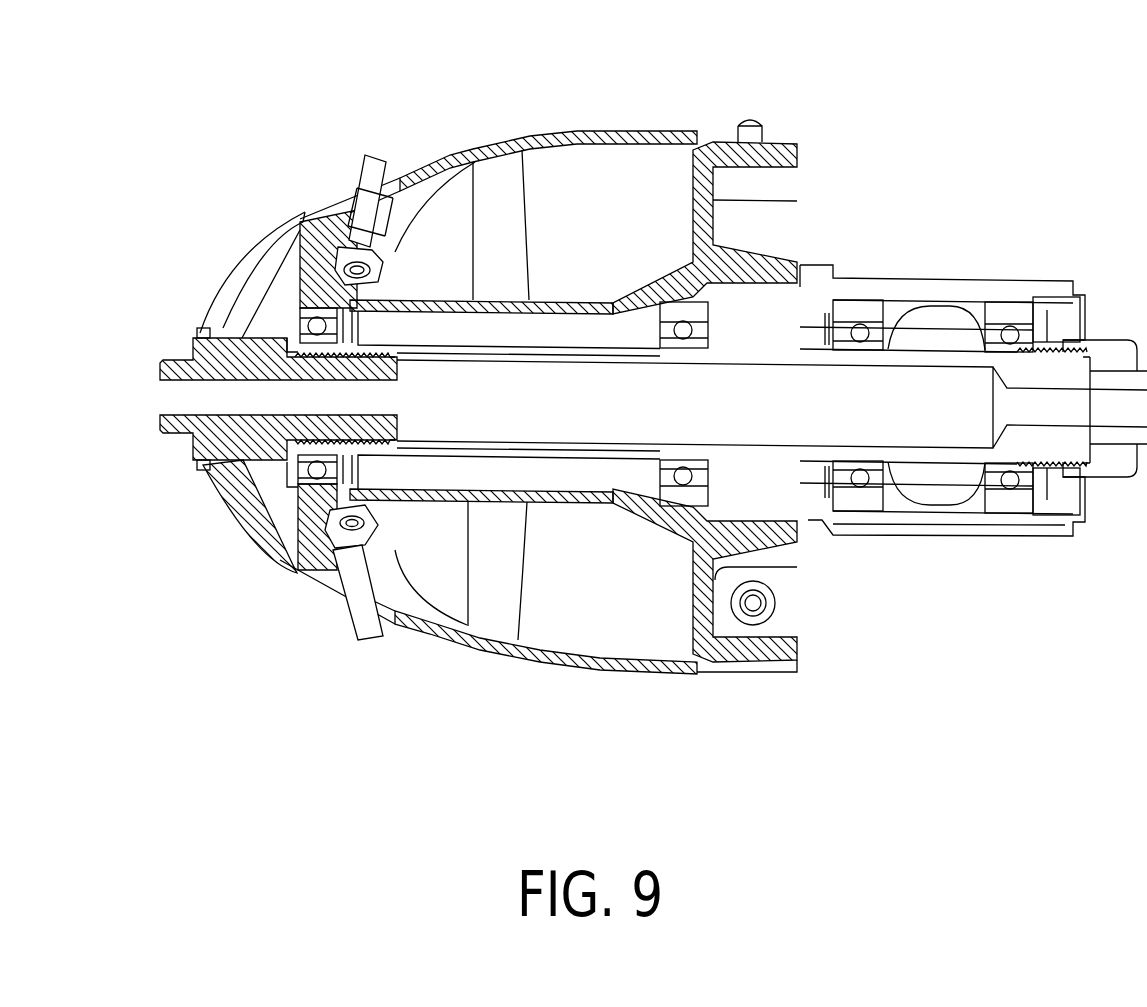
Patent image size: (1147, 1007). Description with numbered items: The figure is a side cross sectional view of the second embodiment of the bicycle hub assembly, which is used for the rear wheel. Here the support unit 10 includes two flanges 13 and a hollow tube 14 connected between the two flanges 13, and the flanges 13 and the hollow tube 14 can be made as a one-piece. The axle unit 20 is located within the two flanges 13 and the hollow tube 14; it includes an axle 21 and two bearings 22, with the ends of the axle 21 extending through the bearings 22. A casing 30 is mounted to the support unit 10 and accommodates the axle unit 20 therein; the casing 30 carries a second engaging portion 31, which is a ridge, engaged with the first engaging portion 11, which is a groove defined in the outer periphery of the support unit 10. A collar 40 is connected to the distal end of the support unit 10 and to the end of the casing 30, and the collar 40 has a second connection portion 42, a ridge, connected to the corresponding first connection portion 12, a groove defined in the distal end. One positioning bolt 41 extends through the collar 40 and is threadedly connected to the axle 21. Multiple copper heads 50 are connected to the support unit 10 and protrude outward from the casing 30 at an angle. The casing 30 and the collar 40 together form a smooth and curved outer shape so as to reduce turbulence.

The support unit 10 is at (673, 68).
The first engaging portion 11 is at (324, 340).
The second engaging portion 31 is at (327, 215).
The first connection portion 12 is at (221, 258).
The second connection portion 42 is at (300, 213).
The flange 13 is at (402, 176).
The hollow tube 14 is at (521, 150).
The axle unit 20 is at (1048, 226).
The axle 21 is at (518, 450).
The bearing 22 is at (316, 482).
The casing 30 is at (632, 676).
The collar 40 is at (221, 375).
The positioning bolt 41 is at (163, 372).
The copper head 50 is at (373, 650).